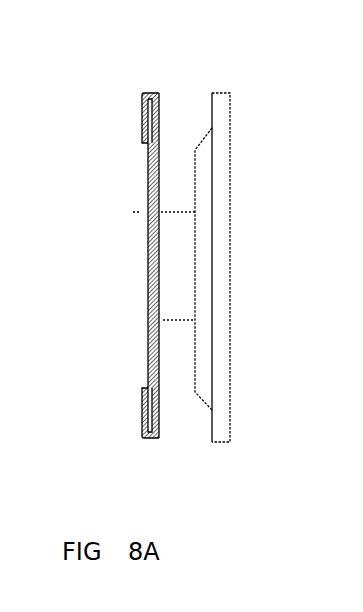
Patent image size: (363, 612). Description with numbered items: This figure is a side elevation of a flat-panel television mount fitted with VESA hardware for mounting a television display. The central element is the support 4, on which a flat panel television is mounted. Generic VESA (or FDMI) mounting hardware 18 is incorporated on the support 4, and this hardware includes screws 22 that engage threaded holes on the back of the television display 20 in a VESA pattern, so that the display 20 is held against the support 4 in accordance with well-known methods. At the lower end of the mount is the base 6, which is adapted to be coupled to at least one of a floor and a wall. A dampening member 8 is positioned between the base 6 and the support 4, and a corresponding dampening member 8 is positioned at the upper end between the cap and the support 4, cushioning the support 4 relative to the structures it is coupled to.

The support 4 is at (147, 302).
The base 6 is at (161, 432).
The dampening member 8 is at (159, 122).
The VESA mounting hardware 18 is at (160, 262).
The television display 20 is at (235, 405).
The screws 22 is at (124, 206).